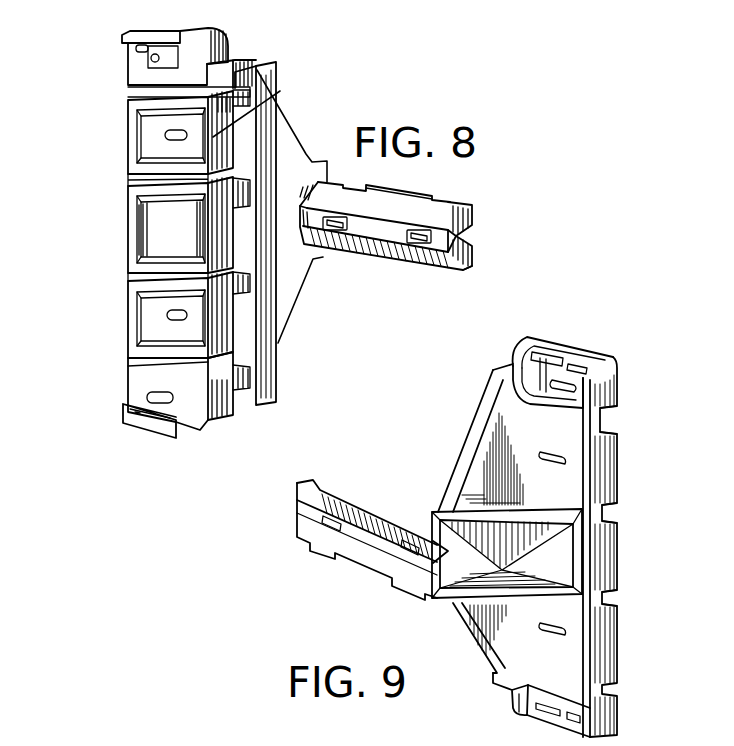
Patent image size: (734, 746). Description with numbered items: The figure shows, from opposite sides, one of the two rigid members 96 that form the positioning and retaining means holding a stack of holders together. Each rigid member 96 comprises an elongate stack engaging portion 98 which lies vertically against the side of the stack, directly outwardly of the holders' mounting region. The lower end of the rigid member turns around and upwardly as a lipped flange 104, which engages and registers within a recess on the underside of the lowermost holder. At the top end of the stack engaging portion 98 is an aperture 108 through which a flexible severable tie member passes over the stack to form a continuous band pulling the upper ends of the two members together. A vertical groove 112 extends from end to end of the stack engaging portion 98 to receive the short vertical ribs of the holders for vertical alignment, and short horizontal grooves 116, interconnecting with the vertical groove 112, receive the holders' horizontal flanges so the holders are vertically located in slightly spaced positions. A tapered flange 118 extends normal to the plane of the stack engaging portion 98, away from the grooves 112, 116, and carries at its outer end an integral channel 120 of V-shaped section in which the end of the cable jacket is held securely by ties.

In FIG. 8, the rigid member 96 is at (112, 150).
In FIG. 9, the rigid member 96 is at (624, 450).
In FIG. 8, the stack engaging portion 98 is at (128, 211).
In FIG. 9, the stack engaging portion 98 is at (603, 478).
In FIG. 8, the lipped flange 104 is at (124, 423).
In FIG. 8, the aperture 108 is at (148, 61).
In FIG. 9, the aperture 108 is at (568, 381).
In FIG. 8, the vertical groove 112 is at (280, 92).
In FIG. 8, the horizontal groove 116 is at (175, 181).
In FIG. 9, the horizontal groove 116 is at (605, 428).
In FIG. 8, the tapered flange 118 is at (285, 289).
In FIG. 9, the tapered flange 118 is at (470, 474).
In FIG. 8, the channel 120 is at (470, 224).
In FIG. 9, the channel 120 is at (298, 522).